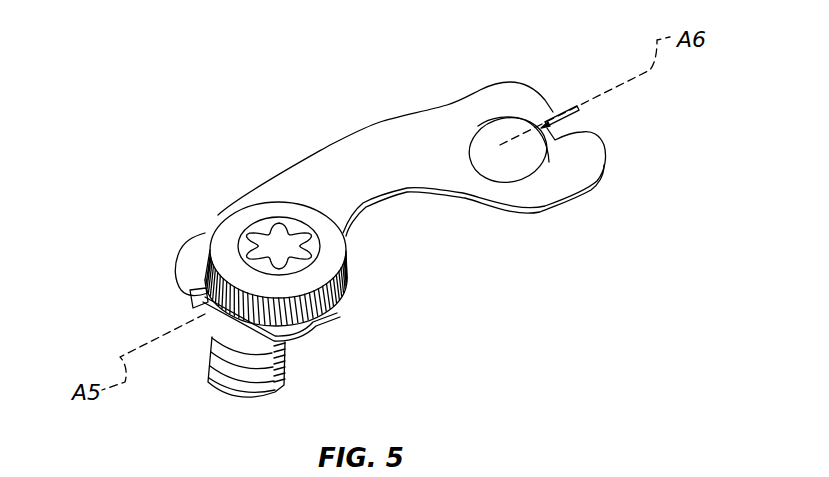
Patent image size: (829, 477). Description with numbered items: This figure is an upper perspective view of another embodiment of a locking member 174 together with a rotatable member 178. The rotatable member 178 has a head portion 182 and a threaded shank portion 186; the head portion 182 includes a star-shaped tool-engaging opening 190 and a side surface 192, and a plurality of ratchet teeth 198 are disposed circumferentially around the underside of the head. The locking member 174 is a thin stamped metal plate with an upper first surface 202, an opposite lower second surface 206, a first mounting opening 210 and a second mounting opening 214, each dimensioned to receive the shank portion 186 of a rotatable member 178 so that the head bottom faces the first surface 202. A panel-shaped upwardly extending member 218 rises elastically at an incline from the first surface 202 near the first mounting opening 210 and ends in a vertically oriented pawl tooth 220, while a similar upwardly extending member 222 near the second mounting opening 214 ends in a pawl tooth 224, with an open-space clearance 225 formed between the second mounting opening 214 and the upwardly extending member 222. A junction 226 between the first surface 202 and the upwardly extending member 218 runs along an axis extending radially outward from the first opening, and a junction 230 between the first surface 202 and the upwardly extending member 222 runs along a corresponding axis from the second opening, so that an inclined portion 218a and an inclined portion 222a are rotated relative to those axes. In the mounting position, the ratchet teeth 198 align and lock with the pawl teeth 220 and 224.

The locking member 174 is at (325, 148).
The rotatable member 178 is at (243, 277).
The head portion 182 is at (333, 270).
The threaded shank portion 186 is at (278, 390).
The tool-engaging opening 190 is at (261, 233).
The side surface 192 is at (208, 233).
The ratchet teeth 198 is at (330, 317).
The upper first surface 202 is at (395, 133).
The lower second surface 206 is at (400, 193).
The first mounting opening 210 is at (205, 310).
The second mounting opening 214 is at (490, 133).
The upwardly extending member 218 is at (206, 313).
The inclined portion 218a is at (286, 350).
The pawl tooth 220 is at (205, 313).
The upwardly extending member 222 is at (578, 114).
The inclined portion 222a is at (605, 119).
The pawl tooth 224 is at (578, 110).
The open-space clearance 225 is at (540, 122).
The junction 226 is at (206, 315).
The junction 230 is at (557, 110).